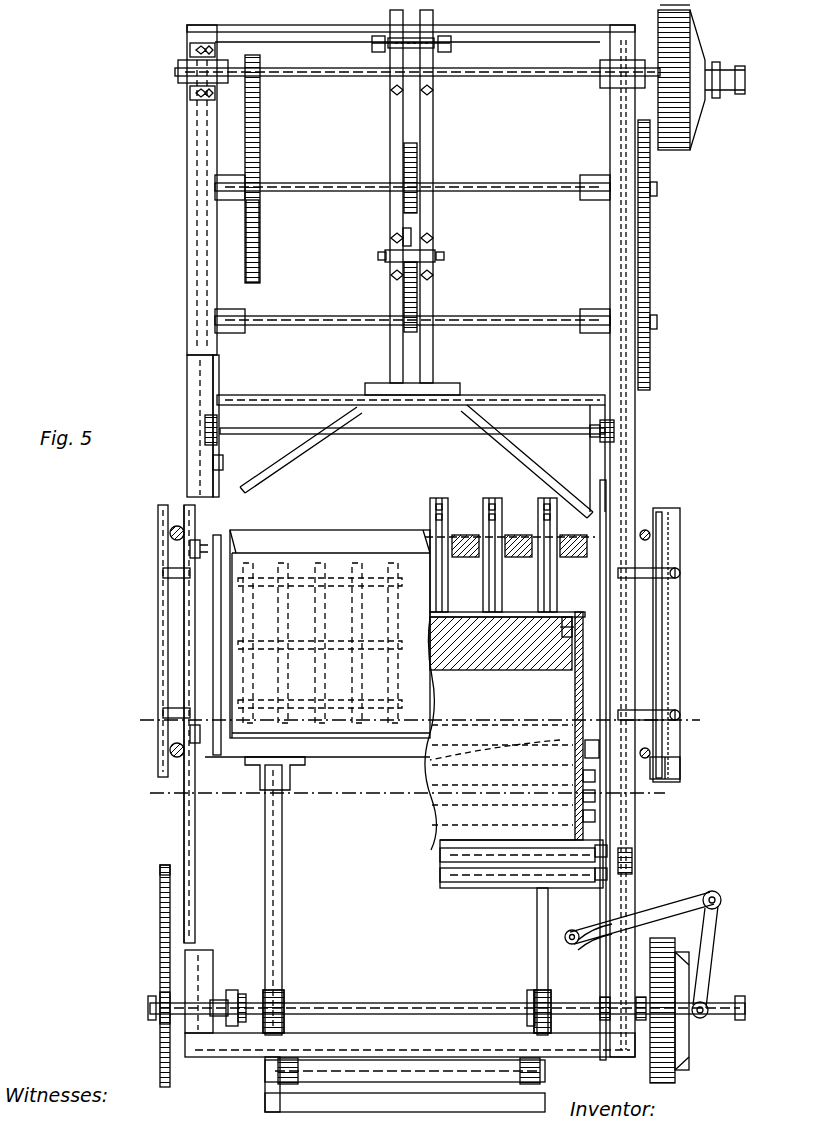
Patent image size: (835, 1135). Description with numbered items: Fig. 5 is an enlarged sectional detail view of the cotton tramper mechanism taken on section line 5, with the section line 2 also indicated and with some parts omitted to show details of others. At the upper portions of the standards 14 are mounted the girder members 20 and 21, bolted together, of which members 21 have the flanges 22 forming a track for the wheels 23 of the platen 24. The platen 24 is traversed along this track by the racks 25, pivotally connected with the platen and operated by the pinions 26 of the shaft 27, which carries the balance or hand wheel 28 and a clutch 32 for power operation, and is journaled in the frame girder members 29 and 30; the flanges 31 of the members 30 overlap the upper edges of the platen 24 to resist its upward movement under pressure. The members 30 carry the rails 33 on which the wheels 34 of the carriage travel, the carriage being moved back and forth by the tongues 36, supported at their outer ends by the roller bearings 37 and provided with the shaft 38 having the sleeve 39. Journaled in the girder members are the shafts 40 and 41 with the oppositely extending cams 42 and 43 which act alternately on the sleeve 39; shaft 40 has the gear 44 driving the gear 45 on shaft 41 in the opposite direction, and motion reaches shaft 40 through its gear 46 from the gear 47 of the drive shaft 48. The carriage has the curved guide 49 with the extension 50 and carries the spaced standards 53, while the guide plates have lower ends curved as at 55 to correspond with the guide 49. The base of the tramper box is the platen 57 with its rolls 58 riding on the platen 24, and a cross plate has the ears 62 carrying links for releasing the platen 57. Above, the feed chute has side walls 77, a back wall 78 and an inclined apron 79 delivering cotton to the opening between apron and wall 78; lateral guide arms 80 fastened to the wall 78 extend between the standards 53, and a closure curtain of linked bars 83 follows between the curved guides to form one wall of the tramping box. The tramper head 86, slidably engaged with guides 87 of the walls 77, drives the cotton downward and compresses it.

The section line 2- 2 is at (417, 723).
The section line 5- 5 is at (401, 793).
The standard 14 is at (165, 535).
The girder member 20 is at (170, 752).
The girder member 21 is at (184, 834).
The flange 22 is at (195, 830).
The wheel 23 is at (248, 758).
The platen 24 is at (352, 745).
The rack 25 is at (283, 915).
The pinion 26 is at (285, 990).
The shaft 27 is at (362, 1003).
The balance or hand wheel 28 is at (160, 942).
The frame girder member 29 is at (662, 698).
The frame girder member 30 is at (213, 480).
The flange 31 is at (588, 948).
The clutch 32 is at (690, 1055).
The rail 33 is at (625, 465).
The wheel 34 is at (210, 432).
The tongue 36 is at (390, 290).
The roller bearing 37 is at (378, 36).
The shaft 38 is at (435, 258).
The sleeve 39 is at (411, 235).
The shaft 40 is at (508, 183).
The shaft 41 is at (492, 318).
The cam 42 is at (418, 166).
The cam 43 is at (417, 300).
The gear 44 is at (650, 235).
The gear 45 is at (651, 303).
The gear 46 is at (259, 255).
The gear 47 is at (260, 92).
The shaft 48 is at (335, 78).
The curved guide 49 is at (600, 750).
The extension 50 is at (680, 768).
The standard 53 is at (465, 557).
The curved end 55 is at (215, 402).
The platen 57 is at (440, 785).
The roll 58 is at (270, 640).
The ear 62 is at (500, 880).
The side wall 77 is at (575, 690).
The back wall 78 is at (512, 612).
The inclined wall or apron 79 is at (500, 733).
The lateral guide arm 80 is at (488, 500).
The bar 83 is at (596, 817).
The tramper head 86 is at (530, 660).
The guide 87 is at (567, 617).